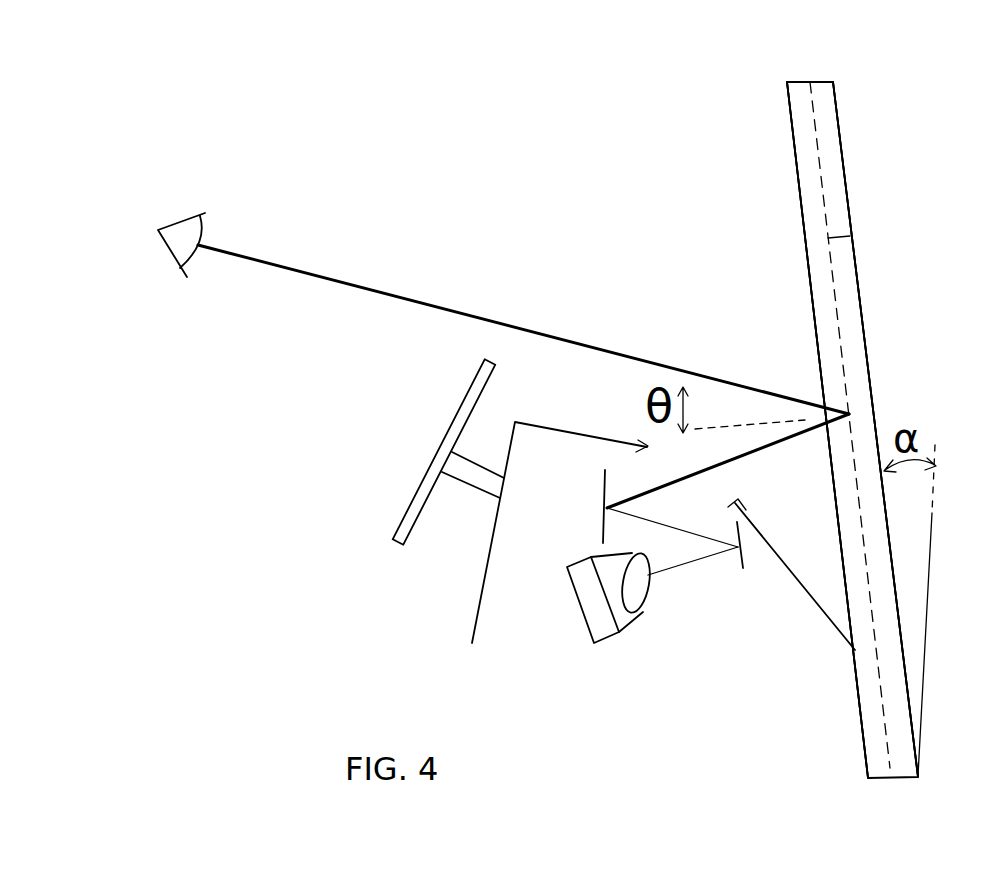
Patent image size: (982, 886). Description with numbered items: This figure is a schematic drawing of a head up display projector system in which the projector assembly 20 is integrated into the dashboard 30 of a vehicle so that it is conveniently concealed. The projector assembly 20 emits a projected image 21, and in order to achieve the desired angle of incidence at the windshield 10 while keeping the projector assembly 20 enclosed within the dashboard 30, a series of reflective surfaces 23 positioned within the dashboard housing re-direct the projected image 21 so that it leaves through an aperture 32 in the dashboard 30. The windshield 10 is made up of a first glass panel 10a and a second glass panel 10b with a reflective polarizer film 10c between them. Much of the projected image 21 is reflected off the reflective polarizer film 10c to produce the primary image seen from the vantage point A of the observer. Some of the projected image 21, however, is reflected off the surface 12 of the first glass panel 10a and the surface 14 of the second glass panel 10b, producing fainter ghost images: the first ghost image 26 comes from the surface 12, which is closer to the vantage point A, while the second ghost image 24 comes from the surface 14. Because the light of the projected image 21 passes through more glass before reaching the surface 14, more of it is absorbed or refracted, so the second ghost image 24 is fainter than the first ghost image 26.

The windshield 10 is at (863, 132).
The first glass panel 10a is at (790, 117).
The second glass panel 10b is at (823, 82).
The reflective polarizer film 10c is at (848, 236).
The surface of first glass panel 12 is at (798, 180).
The surface of second glass panel 14 is at (858, 292).
The projector assembly 20 is at (630, 613).
The projected image 21 is at (650, 362).
The reflective surfaces 23 is at (602, 483).
The second ghost image 24 is at (570, 343).
The first ghost image 26 is at (577, 350).
The dashboard 30 is at (553, 438).
The aperture 32 is at (750, 488).
The vantage point of observer A is at (177, 232).